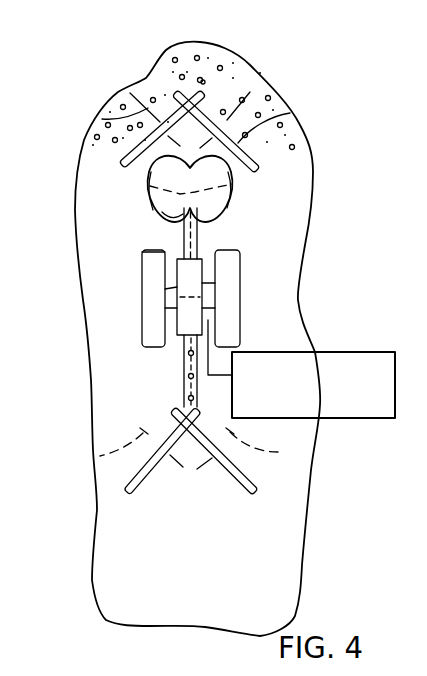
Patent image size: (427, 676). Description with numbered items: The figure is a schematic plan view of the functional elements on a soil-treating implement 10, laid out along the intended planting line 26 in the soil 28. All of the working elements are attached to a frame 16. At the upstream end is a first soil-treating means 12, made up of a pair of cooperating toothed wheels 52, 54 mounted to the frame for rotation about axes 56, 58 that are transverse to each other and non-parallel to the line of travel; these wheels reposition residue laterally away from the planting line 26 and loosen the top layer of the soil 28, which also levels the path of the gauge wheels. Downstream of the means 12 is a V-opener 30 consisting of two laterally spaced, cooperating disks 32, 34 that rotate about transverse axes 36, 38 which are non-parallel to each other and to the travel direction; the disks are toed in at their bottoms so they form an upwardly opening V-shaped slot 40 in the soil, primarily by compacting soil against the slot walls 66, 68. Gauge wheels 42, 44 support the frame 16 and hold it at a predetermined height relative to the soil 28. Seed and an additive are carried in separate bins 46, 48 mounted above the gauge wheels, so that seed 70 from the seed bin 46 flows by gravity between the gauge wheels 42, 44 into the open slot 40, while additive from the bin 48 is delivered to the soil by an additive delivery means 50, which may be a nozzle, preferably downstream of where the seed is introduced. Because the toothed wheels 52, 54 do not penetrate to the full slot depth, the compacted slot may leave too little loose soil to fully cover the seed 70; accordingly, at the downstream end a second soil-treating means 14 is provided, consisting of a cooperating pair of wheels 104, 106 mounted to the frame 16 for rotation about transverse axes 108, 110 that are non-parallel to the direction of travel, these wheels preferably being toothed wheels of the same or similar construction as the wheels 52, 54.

The implement 10 is at (303, 163).
The means for treating soil 12 is at (224, 83).
The means for treating soil 14 is at (257, 465).
The frame 16 is at (207, 293).
The planting line 26 is at (200, 100).
The soil 28 is at (288, 266).
The V-opener 30 is at (268, 223).
The disk 32 is at (232, 198).
The disk 34 is at (160, 212).
The transverse axis 36 is at (236, 179).
The transverse axis 38 is at (144, 174).
The V-shaped slot 40 is at (143, 249).
The gauge wheel 42 is at (240, 318).
The gauge wheel 44 is at (145, 325).
The seed bin 46 is at (165, 289).
The additive bin 48 is at (184, 335).
The additive delivery means 50 is at (386, 352).
The toothed wheel 52 is at (175, 120).
The toothed wheel 54 is at (290, 113).
The axis 56 is at (104, 118).
The axis 58 is at (263, 68).
The slot wall 66 is at (184, 227).
The slot wall 68 is at (198, 240).
The seed 70 is at (185, 387).
The wheel 104 is at (140, 478).
The wheel 106 is at (248, 493).
The transverse axis 108 is at (100, 456).
The transverse axis 110 is at (278, 452).